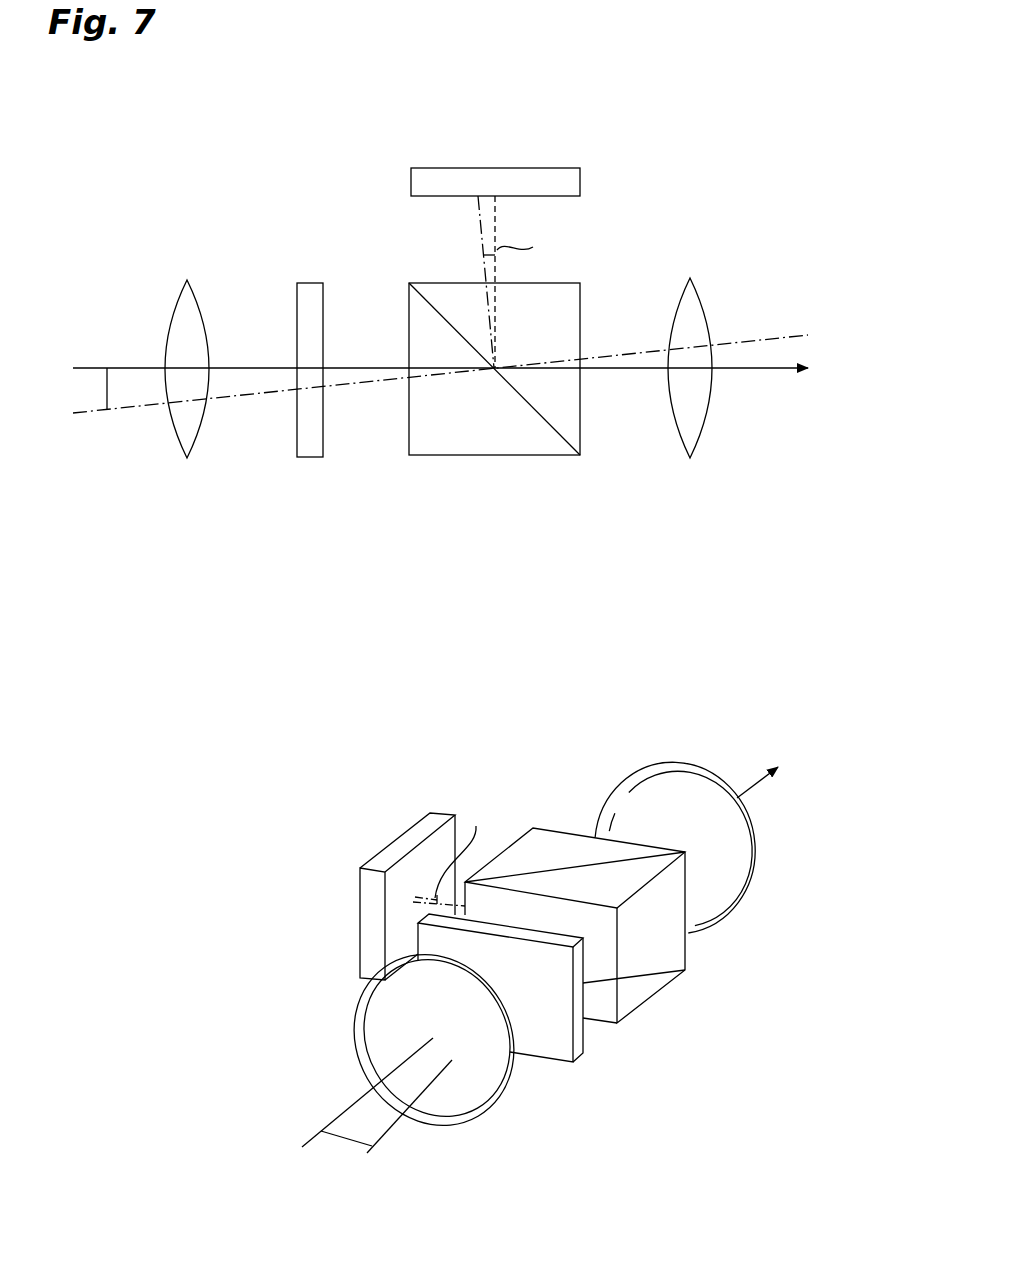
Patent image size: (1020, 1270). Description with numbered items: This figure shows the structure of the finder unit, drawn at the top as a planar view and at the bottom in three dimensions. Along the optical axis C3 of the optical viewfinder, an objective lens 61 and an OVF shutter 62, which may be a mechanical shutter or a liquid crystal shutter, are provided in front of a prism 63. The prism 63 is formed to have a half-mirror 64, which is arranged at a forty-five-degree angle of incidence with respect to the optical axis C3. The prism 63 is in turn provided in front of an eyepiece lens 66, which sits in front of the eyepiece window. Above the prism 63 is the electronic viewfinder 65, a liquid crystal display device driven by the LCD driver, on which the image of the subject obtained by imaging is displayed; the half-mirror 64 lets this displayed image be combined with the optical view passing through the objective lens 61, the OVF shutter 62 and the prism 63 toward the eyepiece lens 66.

The objective lens 61 is at (170, 325).
The OVF shutter 62 is at (297, 325).
The prism 63 is at (409, 322).
The half-mirror 64 is at (557, 427).
The electronic viewfinder 65 is at (580, 180).
The eyepiece lens 66 is at (705, 318).
The optical axis C3 is at (97, 368).